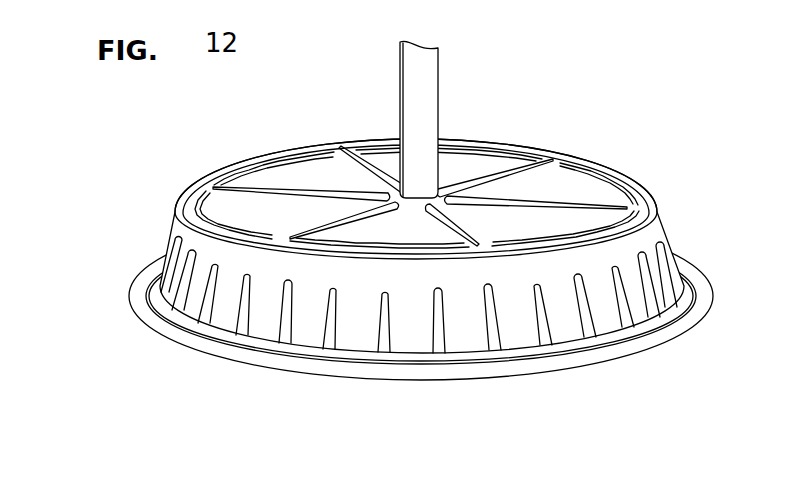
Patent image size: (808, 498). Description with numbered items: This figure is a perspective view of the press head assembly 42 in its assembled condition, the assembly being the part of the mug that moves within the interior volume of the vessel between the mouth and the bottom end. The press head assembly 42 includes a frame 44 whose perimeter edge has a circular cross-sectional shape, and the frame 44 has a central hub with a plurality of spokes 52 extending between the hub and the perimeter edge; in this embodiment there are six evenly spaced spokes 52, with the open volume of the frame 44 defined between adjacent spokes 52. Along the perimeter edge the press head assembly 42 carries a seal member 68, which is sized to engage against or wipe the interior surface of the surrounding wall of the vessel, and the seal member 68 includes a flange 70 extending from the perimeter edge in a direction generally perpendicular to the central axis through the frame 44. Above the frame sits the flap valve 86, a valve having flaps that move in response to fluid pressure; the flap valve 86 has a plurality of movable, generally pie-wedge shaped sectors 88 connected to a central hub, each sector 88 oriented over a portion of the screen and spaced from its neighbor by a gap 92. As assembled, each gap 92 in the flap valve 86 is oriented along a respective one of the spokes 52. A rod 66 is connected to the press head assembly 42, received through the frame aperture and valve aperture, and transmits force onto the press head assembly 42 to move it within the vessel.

The press head assembly 42 is at (434, 214).
The frame 44 is at (664, 216).
The spokes 52 is at (555, 160).
The rod 66 is at (432, 92).
The seal member 68 is at (128, 295).
The flange 70 is at (148, 327).
The flap valve 86 is at (272, 167).
The movable sectors 88 is at (316, 157).
The gap 92 is at (560, 160).